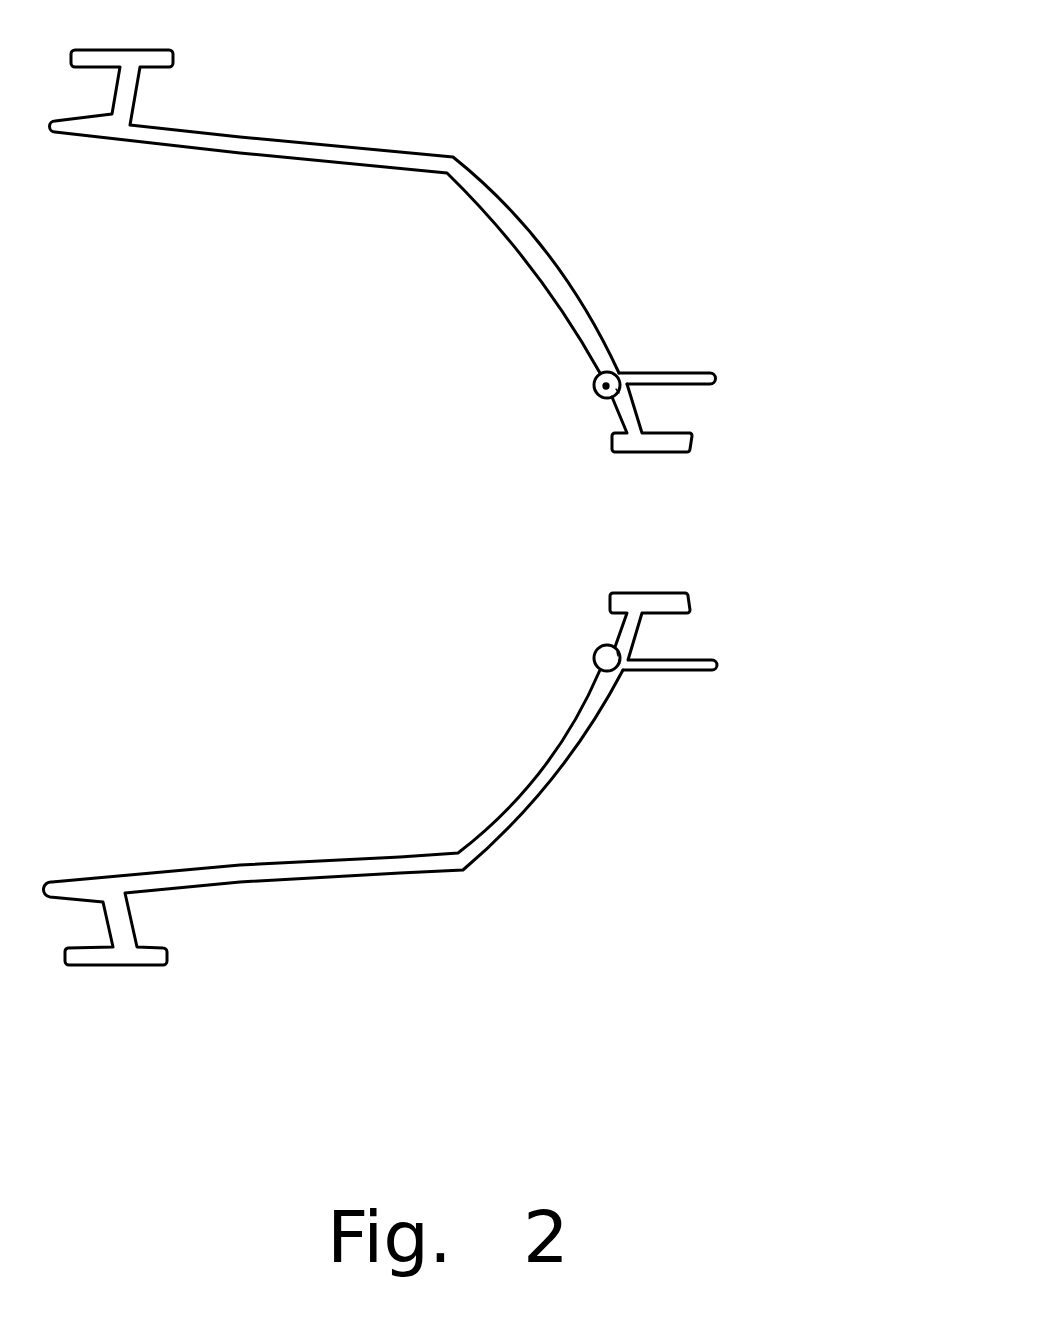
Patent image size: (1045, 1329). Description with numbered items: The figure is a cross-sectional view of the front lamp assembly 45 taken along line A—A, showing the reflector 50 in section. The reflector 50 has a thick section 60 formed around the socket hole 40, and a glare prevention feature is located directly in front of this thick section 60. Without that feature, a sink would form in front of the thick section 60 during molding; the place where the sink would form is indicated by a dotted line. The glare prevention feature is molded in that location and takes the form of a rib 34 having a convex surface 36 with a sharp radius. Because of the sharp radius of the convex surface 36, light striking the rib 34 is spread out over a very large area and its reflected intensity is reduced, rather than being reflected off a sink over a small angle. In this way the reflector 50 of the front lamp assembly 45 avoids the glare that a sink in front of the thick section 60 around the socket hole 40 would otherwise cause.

The front lamp assembly 45 is at (417, 238).
The socket hole 40 is at (433, 744).
The rib 34 is at (617, 368).
The convex surface 36 is at (595, 387).
The thick section 60 is at (720, 378).
The reflector 50 is at (442, 865).